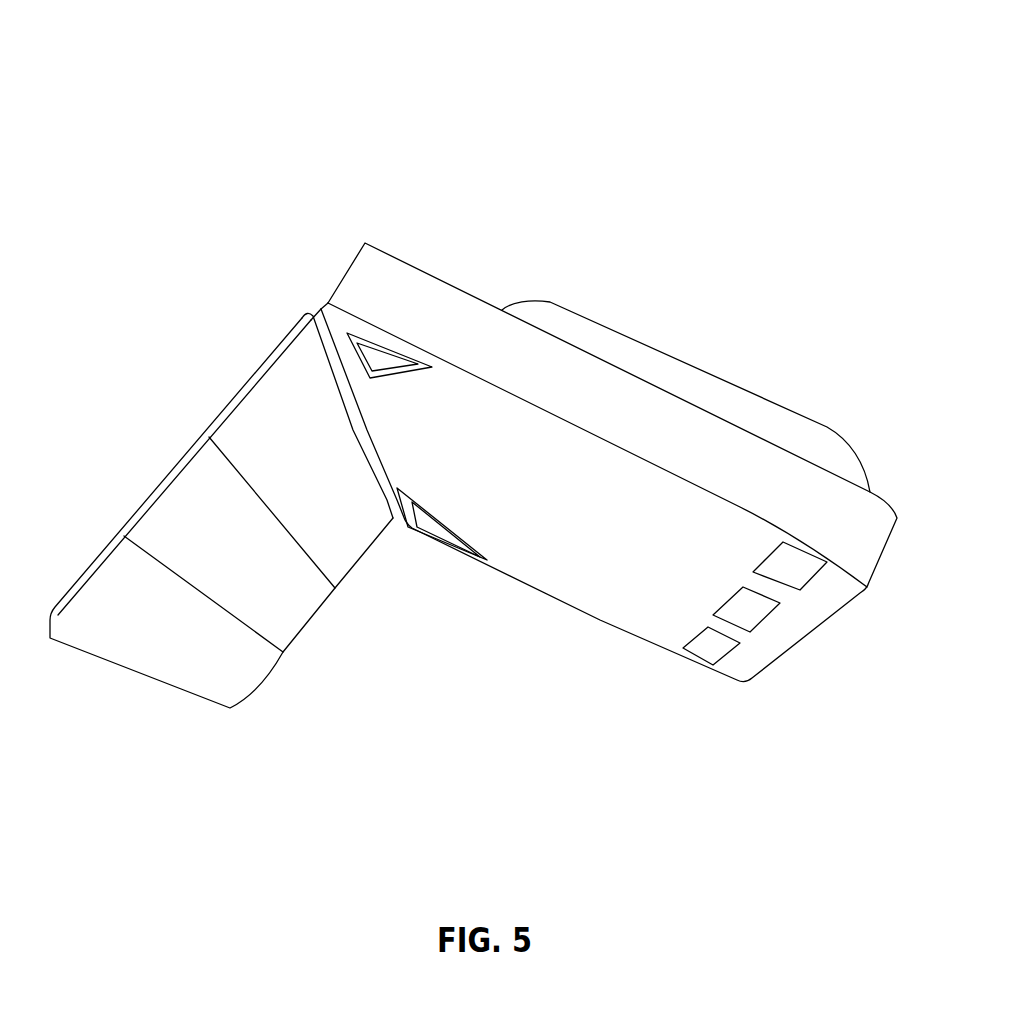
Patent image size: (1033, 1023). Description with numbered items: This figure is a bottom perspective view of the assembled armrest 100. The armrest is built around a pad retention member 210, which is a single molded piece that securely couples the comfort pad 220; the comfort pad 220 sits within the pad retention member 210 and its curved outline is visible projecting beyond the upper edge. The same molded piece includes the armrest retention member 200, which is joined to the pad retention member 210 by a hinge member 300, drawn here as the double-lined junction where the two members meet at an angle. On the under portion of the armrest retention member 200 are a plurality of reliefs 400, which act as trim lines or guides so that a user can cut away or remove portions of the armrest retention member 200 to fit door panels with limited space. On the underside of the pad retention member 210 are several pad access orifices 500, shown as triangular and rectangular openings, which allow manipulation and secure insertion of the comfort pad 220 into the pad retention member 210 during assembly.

The armrest 100 is at (422, 106).
The armrest retention member 200 is at (104, 450).
The pad retention member 210 is at (377, 280).
The comfort pad 220 is at (693, 375).
The hinge member 300 is at (312, 308).
The reliefs 400 is at (213, 432).
The pad access orifices 500 is at (383, 365).